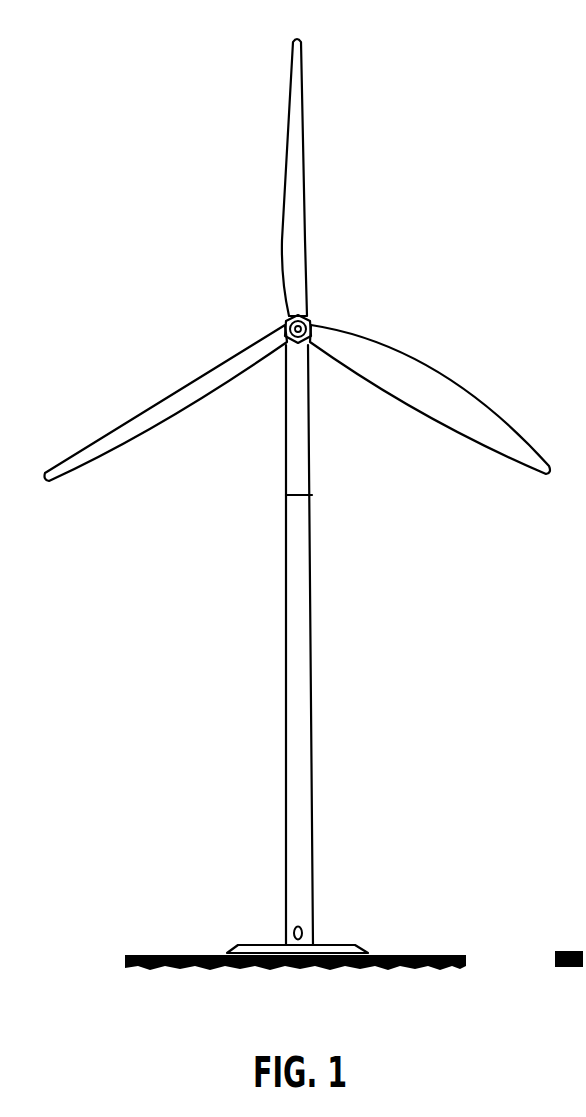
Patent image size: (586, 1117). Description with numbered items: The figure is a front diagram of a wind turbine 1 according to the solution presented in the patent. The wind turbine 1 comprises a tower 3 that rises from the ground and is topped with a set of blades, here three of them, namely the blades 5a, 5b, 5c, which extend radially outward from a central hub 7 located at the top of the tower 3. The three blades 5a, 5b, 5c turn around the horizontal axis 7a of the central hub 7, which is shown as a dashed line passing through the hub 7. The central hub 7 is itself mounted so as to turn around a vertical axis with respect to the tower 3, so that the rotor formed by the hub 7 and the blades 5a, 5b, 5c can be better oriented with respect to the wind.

The wind turbine 1 is at (314, 504).
The tower 3 is at (300, 468).
The blade 5a is at (297, 133).
The blade 5b is at (428, 397).
The blade 5c is at (168, 400).
The central hub 7 is at (282, 322).
The horizontal axis 7a is at (312, 318).